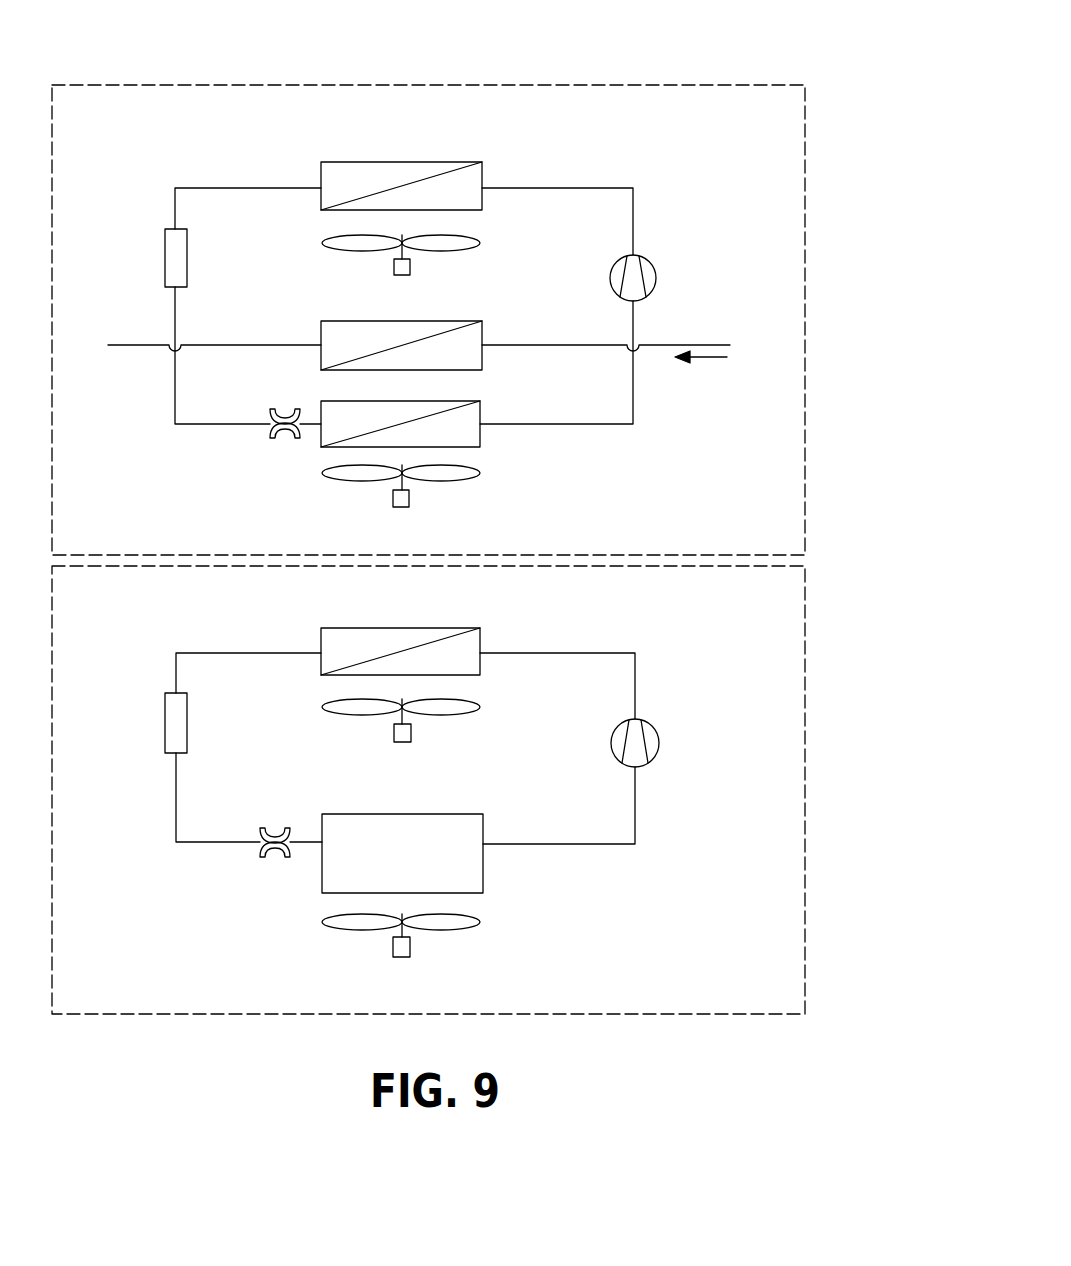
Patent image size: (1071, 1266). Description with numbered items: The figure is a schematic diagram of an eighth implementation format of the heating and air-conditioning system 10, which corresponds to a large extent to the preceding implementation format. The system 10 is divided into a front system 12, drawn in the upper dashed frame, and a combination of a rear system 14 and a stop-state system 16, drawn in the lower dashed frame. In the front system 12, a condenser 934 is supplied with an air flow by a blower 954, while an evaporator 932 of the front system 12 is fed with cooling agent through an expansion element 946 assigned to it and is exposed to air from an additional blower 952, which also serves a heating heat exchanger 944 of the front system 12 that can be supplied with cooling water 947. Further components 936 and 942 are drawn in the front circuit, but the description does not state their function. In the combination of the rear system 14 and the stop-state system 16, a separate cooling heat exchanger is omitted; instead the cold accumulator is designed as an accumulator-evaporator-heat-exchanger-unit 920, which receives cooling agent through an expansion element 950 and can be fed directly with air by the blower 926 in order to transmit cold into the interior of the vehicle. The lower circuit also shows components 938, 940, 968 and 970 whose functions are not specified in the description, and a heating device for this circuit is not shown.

The heating and air-conditioning system 10 is at (700, 76).
The front system 12 is at (807, 292).
The rear system 14 is at (807, 683).
The stop-state system 16 is at (807, 910).
The accumulator-evaporator-heat-exchanger-unit 920 is at (483, 873).
The blower 926 is at (393, 950).
The evaporator 932 is at (475, 432).
The condenser 934 is at (420, 160).
The compressor 936 is at (655, 264).
The condenser 938 is at (420, 627).
The compressor 940 is at (657, 728).
The dryer 942 is at (165, 250).
The heating heat exchanger 944 is at (353, 320).
The expansion element 946 is at (285, 438).
The cooling water 947 is at (707, 358).
The expansion element 950 is at (276, 828).
The additional blower 952 is at (409, 499).
The blower 954 is at (410, 266).
The dryer 968 is at (166, 716).
The condenser fan motor 970 is at (411, 733).